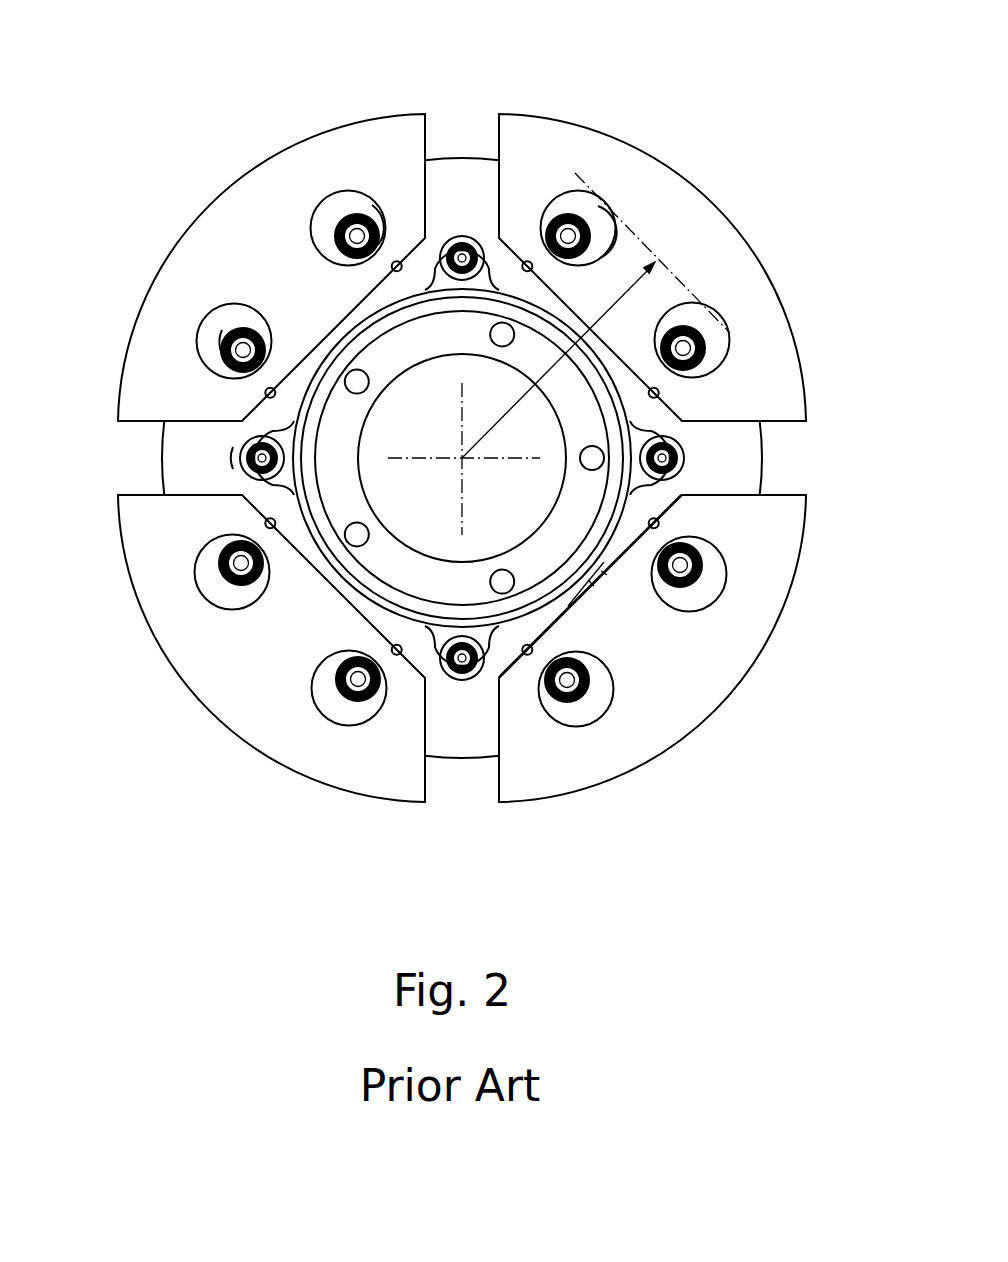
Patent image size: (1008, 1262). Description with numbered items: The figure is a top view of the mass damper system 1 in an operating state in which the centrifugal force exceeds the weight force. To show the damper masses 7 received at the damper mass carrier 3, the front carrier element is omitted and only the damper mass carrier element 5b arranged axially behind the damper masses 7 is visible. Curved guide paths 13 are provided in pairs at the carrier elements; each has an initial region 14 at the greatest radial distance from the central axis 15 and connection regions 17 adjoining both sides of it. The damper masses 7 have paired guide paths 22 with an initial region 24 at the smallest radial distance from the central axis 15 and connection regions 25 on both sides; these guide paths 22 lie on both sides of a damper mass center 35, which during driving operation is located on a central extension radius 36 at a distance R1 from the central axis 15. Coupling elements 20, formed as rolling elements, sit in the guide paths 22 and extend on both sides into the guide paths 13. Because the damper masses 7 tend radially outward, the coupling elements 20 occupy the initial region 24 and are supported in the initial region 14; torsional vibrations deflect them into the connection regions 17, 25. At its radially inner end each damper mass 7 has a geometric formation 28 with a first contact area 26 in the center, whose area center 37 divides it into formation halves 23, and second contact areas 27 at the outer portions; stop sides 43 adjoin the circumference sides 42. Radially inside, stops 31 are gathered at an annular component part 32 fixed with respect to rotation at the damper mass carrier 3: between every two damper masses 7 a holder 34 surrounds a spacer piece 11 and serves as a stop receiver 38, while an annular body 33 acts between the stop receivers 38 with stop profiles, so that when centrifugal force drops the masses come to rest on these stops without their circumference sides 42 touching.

The mass damper system 1 is at (232, 856).
The damper mass carrier 3 is at (441, 747).
The damper mass carrier element 5b is at (468, 697).
The damper masses 7 is at (388, 768).
The spacer piece 11 is at (462, 257).
The guide paths 13 is at (267, 353).
The initial region 14 is at (333, 263).
The central axis 15 is at (461, 457).
The connection regions 17 is at (377, 220).
The coupling elements 20 is at (225, 343).
The guide paths 22 is at (688, 315).
The formation halves 23 is at (690, 565).
The initial region 24 is at (572, 192).
The connection regions 25 is at (527, 215).
The first contact area 26 is at (605, 560).
The second contact areas 27 is at (647, 530).
The geometric formation 28 is at (603, 570).
The stops 31 is at (362, 597).
The annular component part 32 is at (345, 563).
The annular body 33 is at (403, 598).
The holder 34 is at (237, 444).
The damper mass center 35 is at (665, 262).
The central extension radius 36 is at (637, 237).
The area center 37 is at (590, 578).
The stop receiver 38 is at (227, 486).
The circumference sides 42 is at (428, 132).
The stop sides 43 is at (713, 602).
The distance R1 is at (558, 360).